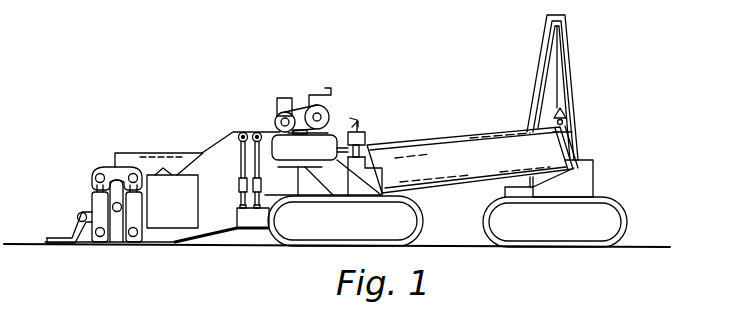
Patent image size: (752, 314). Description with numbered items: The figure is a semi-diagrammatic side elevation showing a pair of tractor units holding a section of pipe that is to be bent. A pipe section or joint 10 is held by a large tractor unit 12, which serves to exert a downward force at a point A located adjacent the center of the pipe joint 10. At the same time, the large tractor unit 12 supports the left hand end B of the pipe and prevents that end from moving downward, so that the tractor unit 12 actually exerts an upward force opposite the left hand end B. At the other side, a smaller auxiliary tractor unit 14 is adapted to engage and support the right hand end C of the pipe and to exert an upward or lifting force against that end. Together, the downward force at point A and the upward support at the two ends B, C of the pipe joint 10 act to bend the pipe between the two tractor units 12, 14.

The left hand end of the pipe B is at (177, 152).
The large tractor unit 12 is at (256, 133).
The point adjacent center of the pipe joint A is at (357, 123).
The pipe section or joint 10 is at (460, 143).
The right hand end of the pipe C is at (568, 120).
The smaller auxiliary tractor unit 14 is at (590, 182).